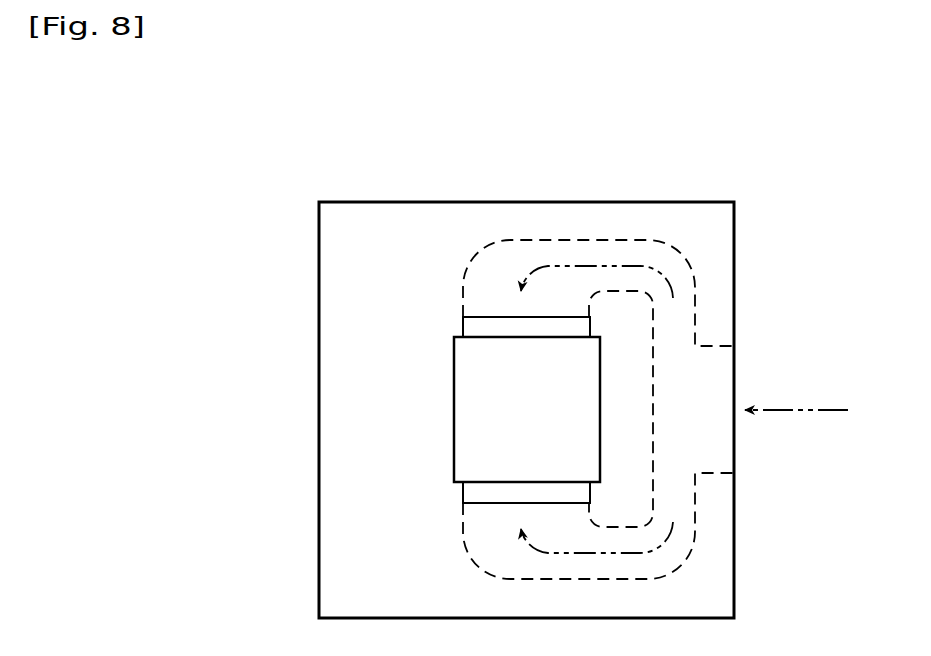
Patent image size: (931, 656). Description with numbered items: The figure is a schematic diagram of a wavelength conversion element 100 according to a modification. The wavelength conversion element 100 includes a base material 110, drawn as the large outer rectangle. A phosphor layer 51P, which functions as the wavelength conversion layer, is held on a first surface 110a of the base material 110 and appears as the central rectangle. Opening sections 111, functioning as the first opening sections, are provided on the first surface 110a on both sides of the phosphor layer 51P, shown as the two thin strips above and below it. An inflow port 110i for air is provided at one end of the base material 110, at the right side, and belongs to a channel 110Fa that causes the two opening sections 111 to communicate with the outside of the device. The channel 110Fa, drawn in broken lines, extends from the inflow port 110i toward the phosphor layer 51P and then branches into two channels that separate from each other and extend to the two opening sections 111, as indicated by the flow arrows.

The wavelength conversion element 100 is at (833, 107).
The base material 110 is at (654, 201).
The first surface 110a is at (723, 278).
The channel 110Fa is at (724, 377).
The inflow port 110i is at (739, 453).
The phosphor layer 51P is at (468, 413).
The opening sections 111 is at (490, 317).